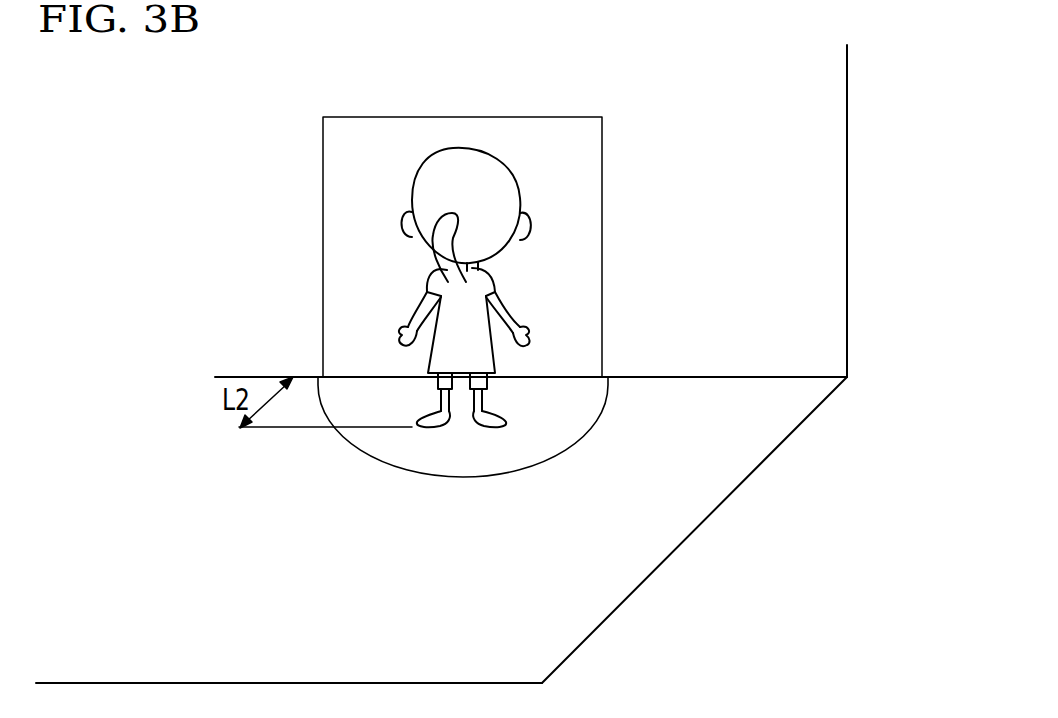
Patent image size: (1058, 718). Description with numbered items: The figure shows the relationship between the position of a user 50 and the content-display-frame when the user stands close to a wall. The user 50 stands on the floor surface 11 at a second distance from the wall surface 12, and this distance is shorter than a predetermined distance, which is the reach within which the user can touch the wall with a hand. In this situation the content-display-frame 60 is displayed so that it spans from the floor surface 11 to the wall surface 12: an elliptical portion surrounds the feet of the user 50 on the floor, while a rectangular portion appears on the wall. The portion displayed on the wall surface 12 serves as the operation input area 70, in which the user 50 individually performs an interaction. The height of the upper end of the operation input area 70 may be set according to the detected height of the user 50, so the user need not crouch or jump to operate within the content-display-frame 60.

The floor surface 11 is at (655, 530).
The wall surface 12 is at (812, 212).
The user 50 is at (458, 148).
The content-display-frame 60 is at (573, 432).
The operation input area 70 is at (578, 247).